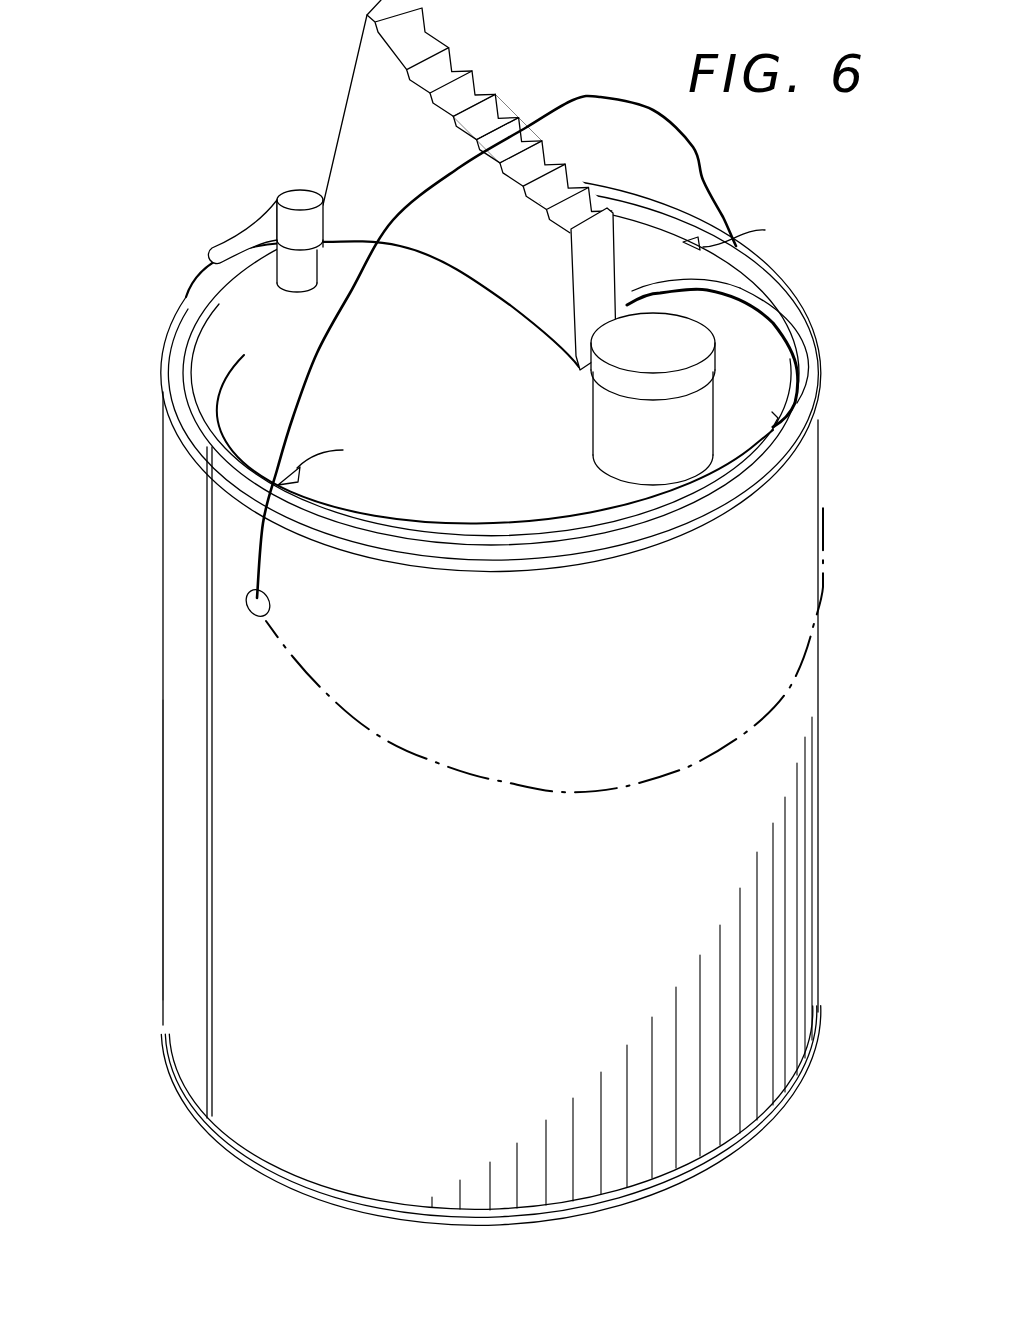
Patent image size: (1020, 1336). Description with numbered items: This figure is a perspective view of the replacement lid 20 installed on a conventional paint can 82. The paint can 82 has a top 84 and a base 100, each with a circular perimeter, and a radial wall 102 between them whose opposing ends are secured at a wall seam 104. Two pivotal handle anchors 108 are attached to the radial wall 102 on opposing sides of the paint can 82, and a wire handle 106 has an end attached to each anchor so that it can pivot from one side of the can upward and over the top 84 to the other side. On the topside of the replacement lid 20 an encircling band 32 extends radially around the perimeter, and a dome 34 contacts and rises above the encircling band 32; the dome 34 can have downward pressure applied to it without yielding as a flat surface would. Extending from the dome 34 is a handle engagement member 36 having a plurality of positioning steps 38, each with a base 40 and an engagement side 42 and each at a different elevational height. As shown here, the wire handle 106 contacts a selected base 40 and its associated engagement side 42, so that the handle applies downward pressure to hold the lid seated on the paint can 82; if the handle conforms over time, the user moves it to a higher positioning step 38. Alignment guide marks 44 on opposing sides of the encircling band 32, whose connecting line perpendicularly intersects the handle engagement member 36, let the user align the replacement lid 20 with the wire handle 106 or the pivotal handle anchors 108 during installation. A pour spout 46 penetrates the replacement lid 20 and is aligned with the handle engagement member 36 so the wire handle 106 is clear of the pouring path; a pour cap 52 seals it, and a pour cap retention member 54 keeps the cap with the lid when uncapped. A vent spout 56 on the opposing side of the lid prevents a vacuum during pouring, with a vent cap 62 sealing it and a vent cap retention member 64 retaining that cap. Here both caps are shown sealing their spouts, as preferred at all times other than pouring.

The replacement lid 20 is at (773, 288).
The encircling band 32 is at (203, 350).
The dome 34 is at (440, 453).
The handle engagement member 36 is at (343, 110).
The positioning steps 38 is at (453, 57).
The base 40 is at (510, 137).
The engagement side 42 is at (452, 117).
The alignment guide marks 44 is at (538, 352).
The pour spout 46 is at (593, 413).
The pour cap 52 is at (580, 363).
The pour cap retention member 54 is at (777, 323).
The vent spout 56 is at (310, 290).
The vent cap 62 is at (293, 197).
The vent cap retention member 64 is at (247, 240).
The paint can 82 is at (163, 712).
The top 84 is at (193, 453).
The base 100 is at (266, 1164).
The radial wall 102 is at (163, 851).
The wall seam 104 is at (207, 925).
The wire handle 106 is at (262, 543).
The pivotal handle anchors 108 is at (250, 606).